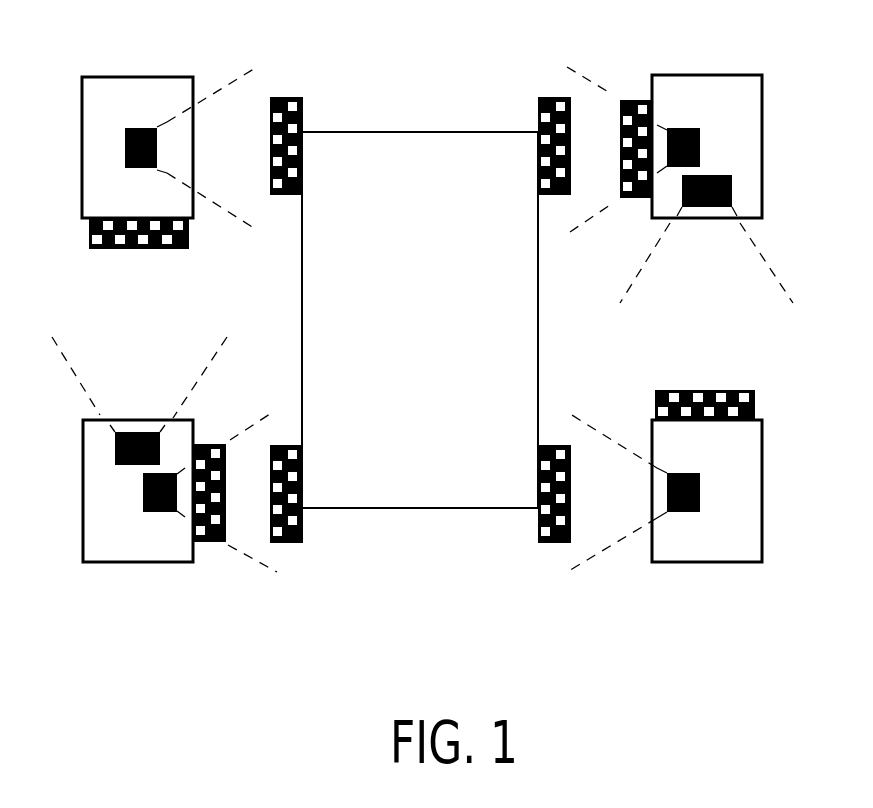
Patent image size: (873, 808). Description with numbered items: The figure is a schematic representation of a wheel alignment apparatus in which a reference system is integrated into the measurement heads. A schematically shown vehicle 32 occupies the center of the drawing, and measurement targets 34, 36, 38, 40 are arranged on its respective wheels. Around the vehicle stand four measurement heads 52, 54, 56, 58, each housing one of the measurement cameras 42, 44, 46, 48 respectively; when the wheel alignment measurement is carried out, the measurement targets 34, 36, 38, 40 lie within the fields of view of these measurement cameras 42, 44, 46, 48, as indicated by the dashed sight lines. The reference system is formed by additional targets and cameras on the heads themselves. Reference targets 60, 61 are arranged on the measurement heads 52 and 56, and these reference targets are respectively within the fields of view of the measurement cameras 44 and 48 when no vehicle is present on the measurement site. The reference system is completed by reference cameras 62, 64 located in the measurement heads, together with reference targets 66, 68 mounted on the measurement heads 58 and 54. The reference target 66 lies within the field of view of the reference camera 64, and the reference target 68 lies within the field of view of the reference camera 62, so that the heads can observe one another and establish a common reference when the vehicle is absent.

The vehicle 32 is at (538, 343).
The measurement target 34 is at (548, 97).
The measurement target 36 is at (287, 97).
The measurement target 38 is at (293, 543).
The measurement target 40 is at (548, 543).
The measurement camera 42 is at (685, 128).
The measurement camera 44 is at (145, 132).
The measurement camera 46 is at (143, 493).
The measurement camera 48 is at (680, 512).
The measurement head 52 is at (737, 122).
The measurement head 54 is at (98, 182).
The measurement head 56 is at (133, 548).
The measurement head 58 is at (738, 492).
The reference target 60 is at (635, 100).
The reference target 61 is at (202, 443).
The reference camera 62 is at (133, 433).
The reference camera 64 is at (703, 207).
The reference target 66 is at (732, 390).
The reference target 68 is at (137, 253).